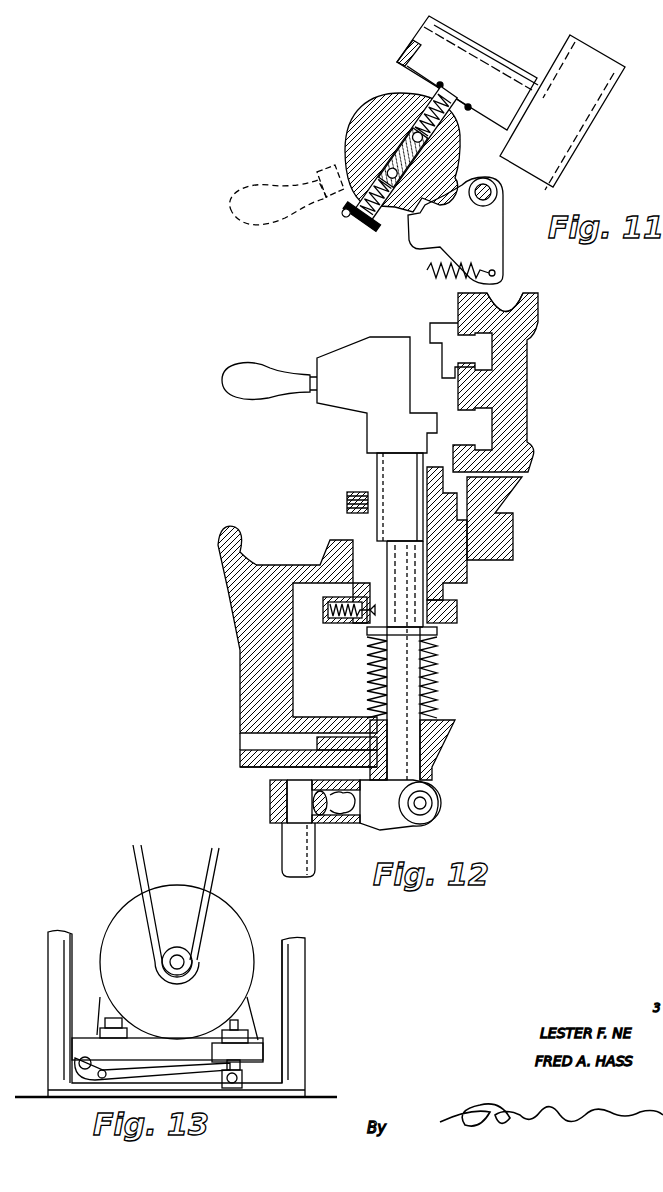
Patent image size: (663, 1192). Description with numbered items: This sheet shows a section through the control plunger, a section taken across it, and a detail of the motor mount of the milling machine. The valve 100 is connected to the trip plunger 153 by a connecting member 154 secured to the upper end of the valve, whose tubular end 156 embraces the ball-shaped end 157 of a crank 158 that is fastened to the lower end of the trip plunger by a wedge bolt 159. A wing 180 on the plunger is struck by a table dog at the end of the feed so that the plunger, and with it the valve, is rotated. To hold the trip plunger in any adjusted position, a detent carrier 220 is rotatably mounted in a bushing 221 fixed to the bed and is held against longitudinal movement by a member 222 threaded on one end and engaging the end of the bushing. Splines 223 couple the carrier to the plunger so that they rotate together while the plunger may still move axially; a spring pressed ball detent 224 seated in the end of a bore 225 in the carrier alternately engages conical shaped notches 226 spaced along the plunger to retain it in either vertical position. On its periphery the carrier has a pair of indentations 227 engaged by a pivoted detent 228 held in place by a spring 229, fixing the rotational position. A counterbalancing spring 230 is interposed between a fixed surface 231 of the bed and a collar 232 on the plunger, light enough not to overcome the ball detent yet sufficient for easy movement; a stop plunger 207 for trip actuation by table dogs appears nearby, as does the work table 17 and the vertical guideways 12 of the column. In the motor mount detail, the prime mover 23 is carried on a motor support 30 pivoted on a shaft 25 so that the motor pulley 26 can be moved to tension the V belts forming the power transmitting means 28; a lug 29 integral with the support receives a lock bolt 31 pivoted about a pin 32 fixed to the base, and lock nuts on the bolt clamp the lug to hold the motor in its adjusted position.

In FIG. 11, the vertical guideways 12 is at (592, 140).
In FIG. 12, the work table 17 is at (453, 298).
In FIG. 11, the indentations 227 is at (463, 168).
In FIG. 11, the pivoted detent 228 is at (412, 228).
In FIG. 12, the spring 229 is at (498, 288).
In FIG. 12, the wing 180 is at (353, 400).
In FIG. 12, the threaded member 222 is at (347, 513).
In FIG. 12, the stop plunger 207 is at (510, 493).
In FIG. 12, the bushing 221 is at (448, 590).
In FIG. 12, the conical shaped notches 226 is at (458, 607).
In FIG. 12, the detent carrier 220 is at (457, 620).
In FIG. 12, the splines 223 is at (443, 632).
In FIG. 12, the collar 232 is at (437, 637).
In FIG. 12, the spring 230 is at (437, 680).
In FIG. 12, the trip plunger 153 is at (407, 723).
In FIG. 12, the fixed surface 231 is at (443, 723).
In FIG. 12, the bore 225 is at (347, 622).
In FIG. 12, the spring pressed ball detent 224 is at (363, 630).
In FIG. 12, the connecting member 154 is at (272, 790).
In FIG. 12, the valve 100 is at (290, 845).
In FIG. 12, the tubular end 156 is at (323, 827).
In FIG. 12, the ball-shaped end 157 is at (338, 822).
In FIG. 12, the crank 158 is at (395, 817).
In FIG. 12, the wedge bolt 159 is at (433, 810).
In FIG. 13, the prime mover 23 is at (233, 922).
In FIG. 13, the motor pulley 26 is at (173, 945).
In FIG. 13, the power transmitting means 28 is at (217, 875).
In FIG. 13, the motor support 30 is at (85, 1052).
In FIG. 13, the lug 29 is at (247, 1047).
In FIG. 13, the lock bolt 31 is at (243, 1027).
In FIG. 13, the pin 32 is at (243, 1073).
In FIG. 13, the shaft 25 is at (80, 1068).